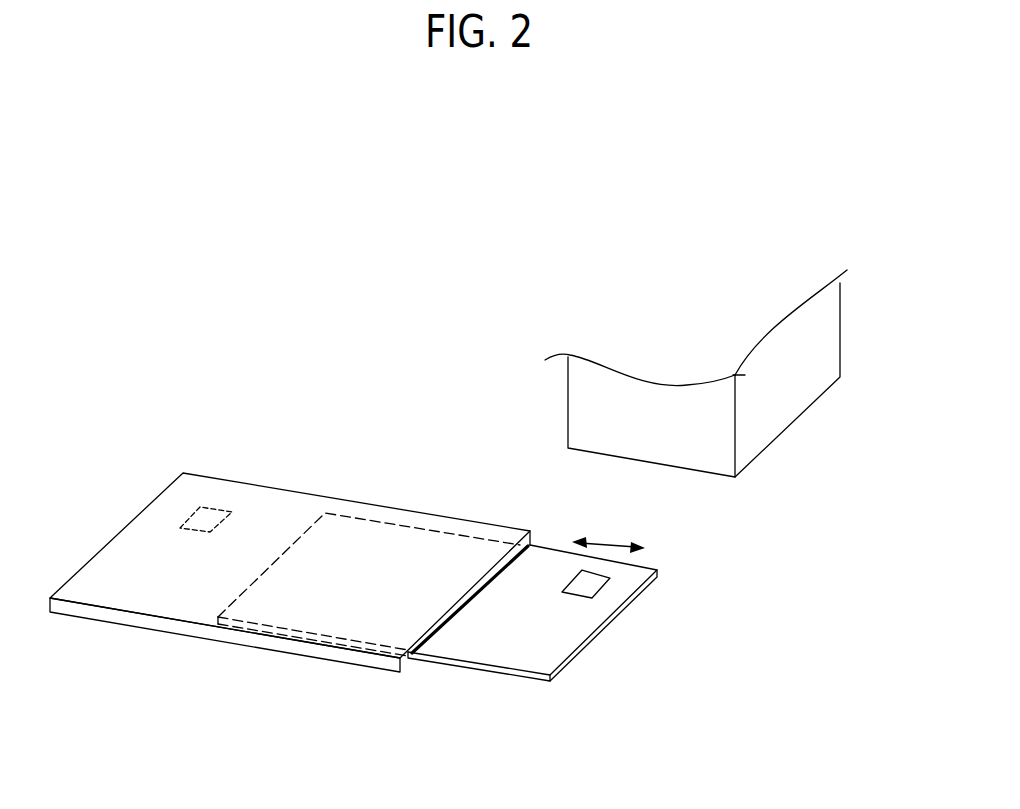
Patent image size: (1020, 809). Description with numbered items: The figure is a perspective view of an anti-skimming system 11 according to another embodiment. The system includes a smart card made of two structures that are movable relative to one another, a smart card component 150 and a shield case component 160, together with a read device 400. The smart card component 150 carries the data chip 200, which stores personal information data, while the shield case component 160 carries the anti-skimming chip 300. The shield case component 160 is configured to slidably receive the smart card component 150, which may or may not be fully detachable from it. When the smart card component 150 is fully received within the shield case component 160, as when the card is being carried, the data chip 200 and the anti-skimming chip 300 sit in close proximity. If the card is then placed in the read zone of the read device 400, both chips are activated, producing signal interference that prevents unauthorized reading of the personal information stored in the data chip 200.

The anti-skimming system 11 is at (756, 144).
The smart card component 150 is at (480, 667).
The shield case component 160 is at (192, 628).
The data chip 200 is at (610, 578).
The anti-skimming chip 300 is at (213, 508).
The read device 400 is at (775, 405).